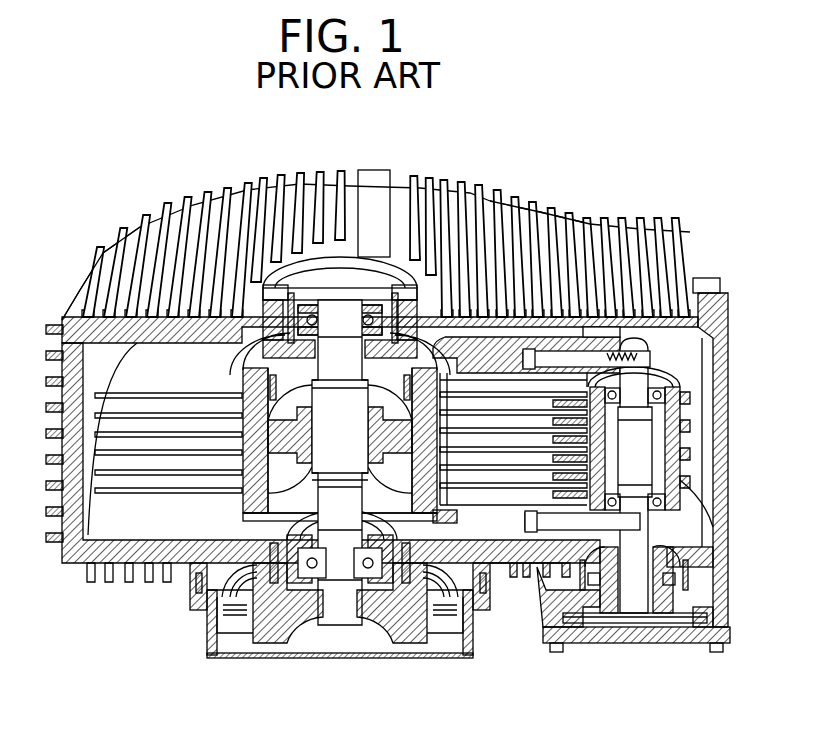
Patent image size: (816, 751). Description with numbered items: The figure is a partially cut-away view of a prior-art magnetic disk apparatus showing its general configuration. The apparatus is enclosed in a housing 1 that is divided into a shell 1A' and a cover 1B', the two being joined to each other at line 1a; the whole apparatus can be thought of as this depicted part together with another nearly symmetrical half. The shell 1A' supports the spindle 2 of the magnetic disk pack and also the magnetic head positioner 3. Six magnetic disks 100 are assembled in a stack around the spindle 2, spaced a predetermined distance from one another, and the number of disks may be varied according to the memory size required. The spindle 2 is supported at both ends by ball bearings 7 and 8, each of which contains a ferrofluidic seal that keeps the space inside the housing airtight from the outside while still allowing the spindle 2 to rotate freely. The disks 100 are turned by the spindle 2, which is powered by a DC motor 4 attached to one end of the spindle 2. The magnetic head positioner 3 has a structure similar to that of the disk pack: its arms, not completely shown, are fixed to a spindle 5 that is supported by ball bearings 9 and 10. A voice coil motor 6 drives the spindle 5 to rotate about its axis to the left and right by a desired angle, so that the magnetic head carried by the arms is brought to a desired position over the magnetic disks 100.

The housing 1 is at (250, 215).
The line 1a is at (395, 178).
The shell 1A' is at (91, 302).
The cover 1B' is at (540, 170).
The spindle 2 is at (330, 325).
The magnetic head positioner 3 is at (672, 652).
The DC motor 4 is at (237, 628).
The spindle 5 is at (637, 438).
The voice coil motor 6 is at (621, 645).
The ball bearing 7 is at (360, 297).
The ball bearing 8 is at (372, 622).
The ball bearing 9 is at (665, 365).
The ball bearing 10 is at (685, 462).
The magnetic disks 100 is at (178, 357).